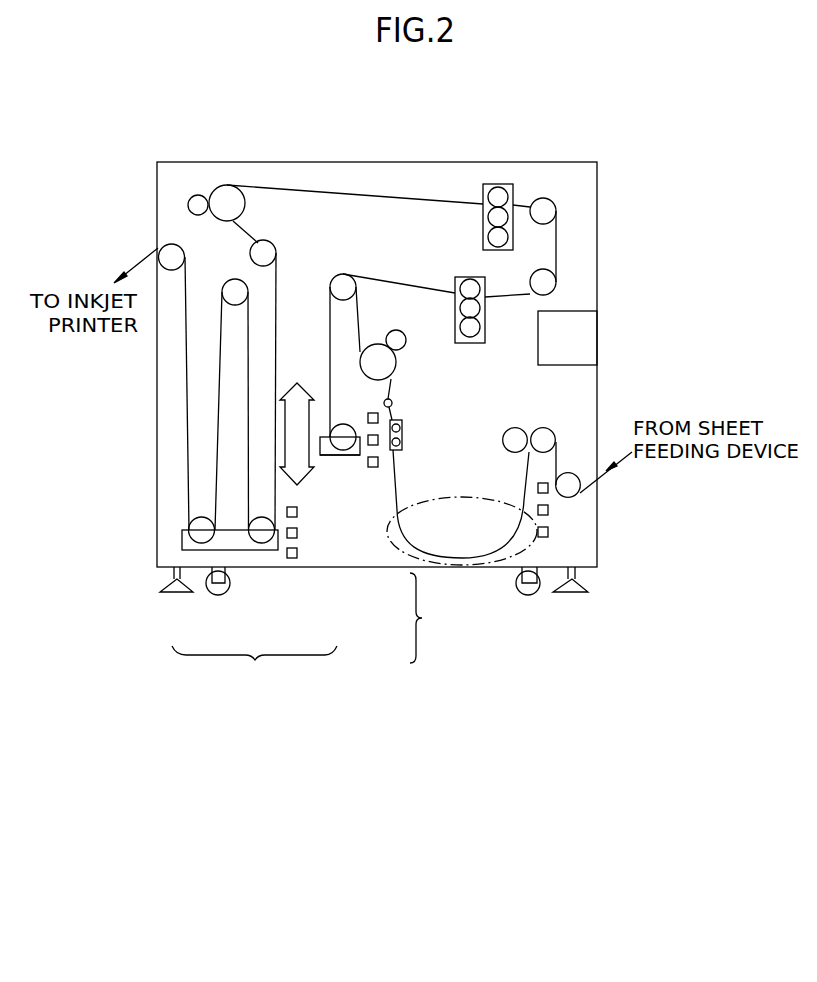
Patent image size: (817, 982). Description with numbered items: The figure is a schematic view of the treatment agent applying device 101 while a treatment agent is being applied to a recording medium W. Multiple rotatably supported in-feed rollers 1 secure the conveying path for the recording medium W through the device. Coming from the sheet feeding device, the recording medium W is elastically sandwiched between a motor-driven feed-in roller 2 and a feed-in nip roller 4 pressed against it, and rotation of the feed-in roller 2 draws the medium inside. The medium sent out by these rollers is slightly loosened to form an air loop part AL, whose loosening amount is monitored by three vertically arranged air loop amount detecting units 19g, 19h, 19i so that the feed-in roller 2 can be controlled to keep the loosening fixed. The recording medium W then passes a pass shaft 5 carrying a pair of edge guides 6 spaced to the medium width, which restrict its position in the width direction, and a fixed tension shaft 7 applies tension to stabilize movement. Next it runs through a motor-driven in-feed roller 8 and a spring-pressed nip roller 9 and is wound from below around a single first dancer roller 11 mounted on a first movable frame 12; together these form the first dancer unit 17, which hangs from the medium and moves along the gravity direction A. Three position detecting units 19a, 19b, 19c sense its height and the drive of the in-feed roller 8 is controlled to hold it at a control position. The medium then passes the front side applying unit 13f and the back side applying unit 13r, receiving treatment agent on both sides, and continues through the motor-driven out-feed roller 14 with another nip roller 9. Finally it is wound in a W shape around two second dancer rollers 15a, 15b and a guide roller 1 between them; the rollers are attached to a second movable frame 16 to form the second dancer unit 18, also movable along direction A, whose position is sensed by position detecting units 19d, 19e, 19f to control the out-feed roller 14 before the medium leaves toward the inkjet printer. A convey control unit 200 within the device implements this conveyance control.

The in-feed rollers 1 is at (160, 248).
The feed-in roller 2 is at (545, 428).
The feed-in nip roller 4 is at (504, 443).
The pass shaft 5 is at (402, 441).
The edge guides 6 is at (402, 420).
The tension shaft 7 is at (392, 402).
The in-feed roller 8 is at (372, 347).
The nip roller 9 is at (200, 195).
The first dancer roller 11 is at (343, 450).
The first movable frame 12 is at (350, 455).
The front side applying unit 13f is at (460, 277).
The back side applying unit 13r is at (493, 184).
The out-feed roller 14 is at (218, 187).
The second dancer roller 15a is at (201, 538).
The second dancer roller 15b is at (261, 538).
The second movable frame 16 is at (233, 545).
The first dancer unit 17 is at (429, 618).
The second dancer unit 18 is at (254, 663).
The position detecting unit 19a is at (373, 467).
The position detecting unit 19b is at (378, 441).
The position detecting unit 19c is at (368, 413).
The position detecting unit 19d is at (297, 553).
The position detecting unit 19e is at (297, 531).
The position detecting unit 19f is at (297, 510).
The air loop amount detecting unit 19g is at (548, 531).
The air loop amount detecting unit 19h is at (548, 510).
The air loop amount detecting unit 19i is at (548, 490).
The treatment agent applying device 101 is at (597, 181).
The convey control unit 200 is at (597, 334).
The recording medium W is at (377, 197).
The air loop part AL is at (510, 560).
The gravity direction A is at (297, 434).